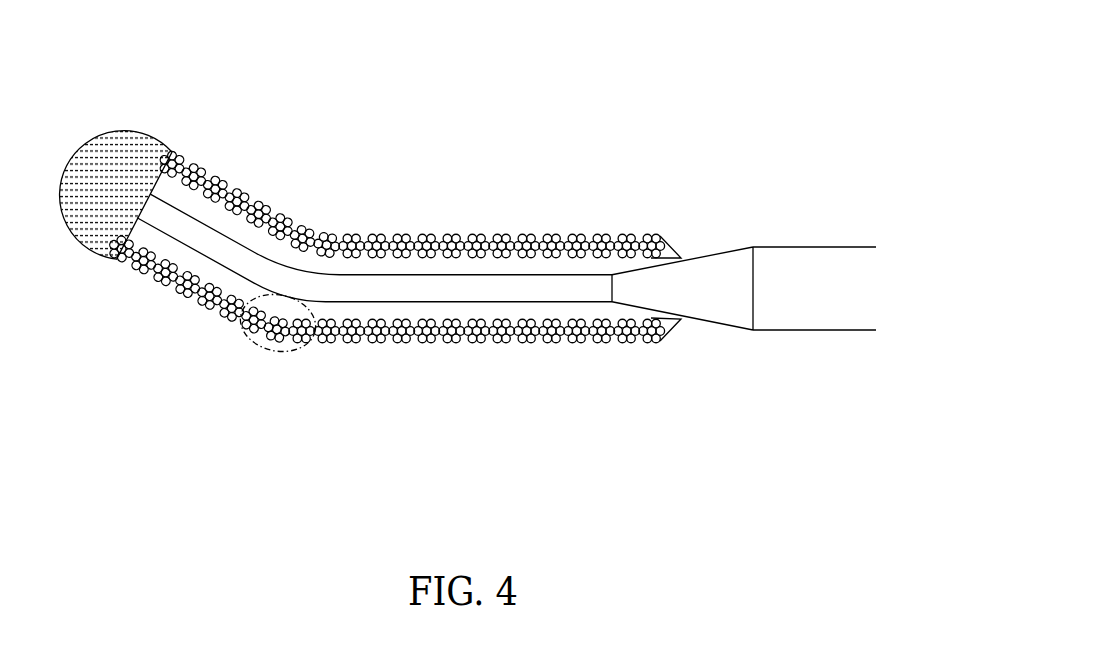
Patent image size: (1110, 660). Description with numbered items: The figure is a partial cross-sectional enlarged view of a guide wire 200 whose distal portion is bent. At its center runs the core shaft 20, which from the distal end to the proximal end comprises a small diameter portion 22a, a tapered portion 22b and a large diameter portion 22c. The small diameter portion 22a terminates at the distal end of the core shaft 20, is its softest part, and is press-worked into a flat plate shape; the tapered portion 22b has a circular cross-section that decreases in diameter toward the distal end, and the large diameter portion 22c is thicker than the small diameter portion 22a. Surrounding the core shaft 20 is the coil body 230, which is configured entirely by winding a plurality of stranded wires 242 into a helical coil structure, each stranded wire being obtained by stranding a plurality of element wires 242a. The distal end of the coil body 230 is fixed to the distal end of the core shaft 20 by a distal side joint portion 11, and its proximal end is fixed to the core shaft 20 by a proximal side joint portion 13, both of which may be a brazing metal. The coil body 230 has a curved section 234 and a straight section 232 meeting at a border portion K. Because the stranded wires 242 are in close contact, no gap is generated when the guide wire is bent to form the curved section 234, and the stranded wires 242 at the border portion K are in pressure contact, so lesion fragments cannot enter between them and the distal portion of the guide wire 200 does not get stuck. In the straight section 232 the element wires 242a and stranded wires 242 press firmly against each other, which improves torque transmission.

The distal side joint portion 11 is at (102, 132).
The proximal side joint portion 13 is at (680, 255).
The core shaft 20 is at (744, 295).
The small diameter portion 22a is at (188, 248).
The tapered portion 22b is at (703, 320).
The large diameter portion 22c is at (794, 247).
The guide wire 200 is at (595, 110).
The coil body 230 is at (385, 349).
The straight section 232 is at (662, 221).
The curved section 234 is at (337, 221).
The stranded wires 242 is at (300, 341).
The element wires 242a is at (412, 341).
The border portion K is at (245, 334).